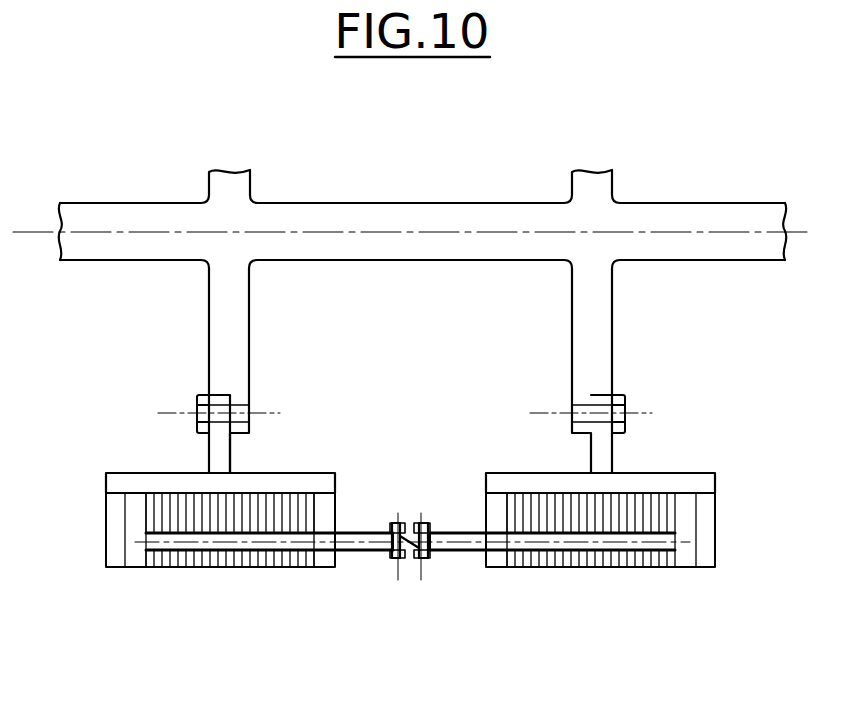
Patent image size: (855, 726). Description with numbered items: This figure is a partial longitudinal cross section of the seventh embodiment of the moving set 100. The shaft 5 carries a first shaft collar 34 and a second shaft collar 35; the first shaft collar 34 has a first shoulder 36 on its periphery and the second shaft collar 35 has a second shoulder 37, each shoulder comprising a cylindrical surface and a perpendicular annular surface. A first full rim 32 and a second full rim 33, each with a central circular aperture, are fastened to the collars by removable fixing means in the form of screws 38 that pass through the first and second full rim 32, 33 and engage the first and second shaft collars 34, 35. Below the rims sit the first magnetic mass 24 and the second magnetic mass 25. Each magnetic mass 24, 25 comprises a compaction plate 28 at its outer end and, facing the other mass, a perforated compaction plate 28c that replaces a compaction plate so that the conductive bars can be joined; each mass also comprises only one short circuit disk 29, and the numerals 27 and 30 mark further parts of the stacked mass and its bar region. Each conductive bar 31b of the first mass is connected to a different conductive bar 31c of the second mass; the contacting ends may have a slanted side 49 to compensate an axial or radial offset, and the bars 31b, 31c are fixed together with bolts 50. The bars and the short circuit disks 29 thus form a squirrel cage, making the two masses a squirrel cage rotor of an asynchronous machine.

The moving set 100 is at (688, 165).
The shaft 5 is at (302, 212).
The first magnetic mass 24 is at (168, 627).
The second magnetic mass 25 is at (548, 627).
The fins 27 is at (187, 563).
The compaction plate 28 is at (118, 563).
The perforated compaction plate 28c is at (330, 560).
The short circuit disk 29 is at (143, 560).
The shaft portion 30 is at (245, 555).
The conductive bar of the first set 31b is at (157, 537).
The conductive bar of the second set 31c is at (663, 535).
The first full rim 32 is at (121, 473).
The second full rim 33 is at (692, 473).
The first shaft collar 34 is at (250, 302).
The second shaft collar 35 is at (612, 302).
The first shoulder 36 is at (196, 390).
The second shoulder 37 is at (627, 389).
The screws 38 is at (250, 422).
The slanted side 49 is at (406, 518).
The bolts 50 is at (391, 522).